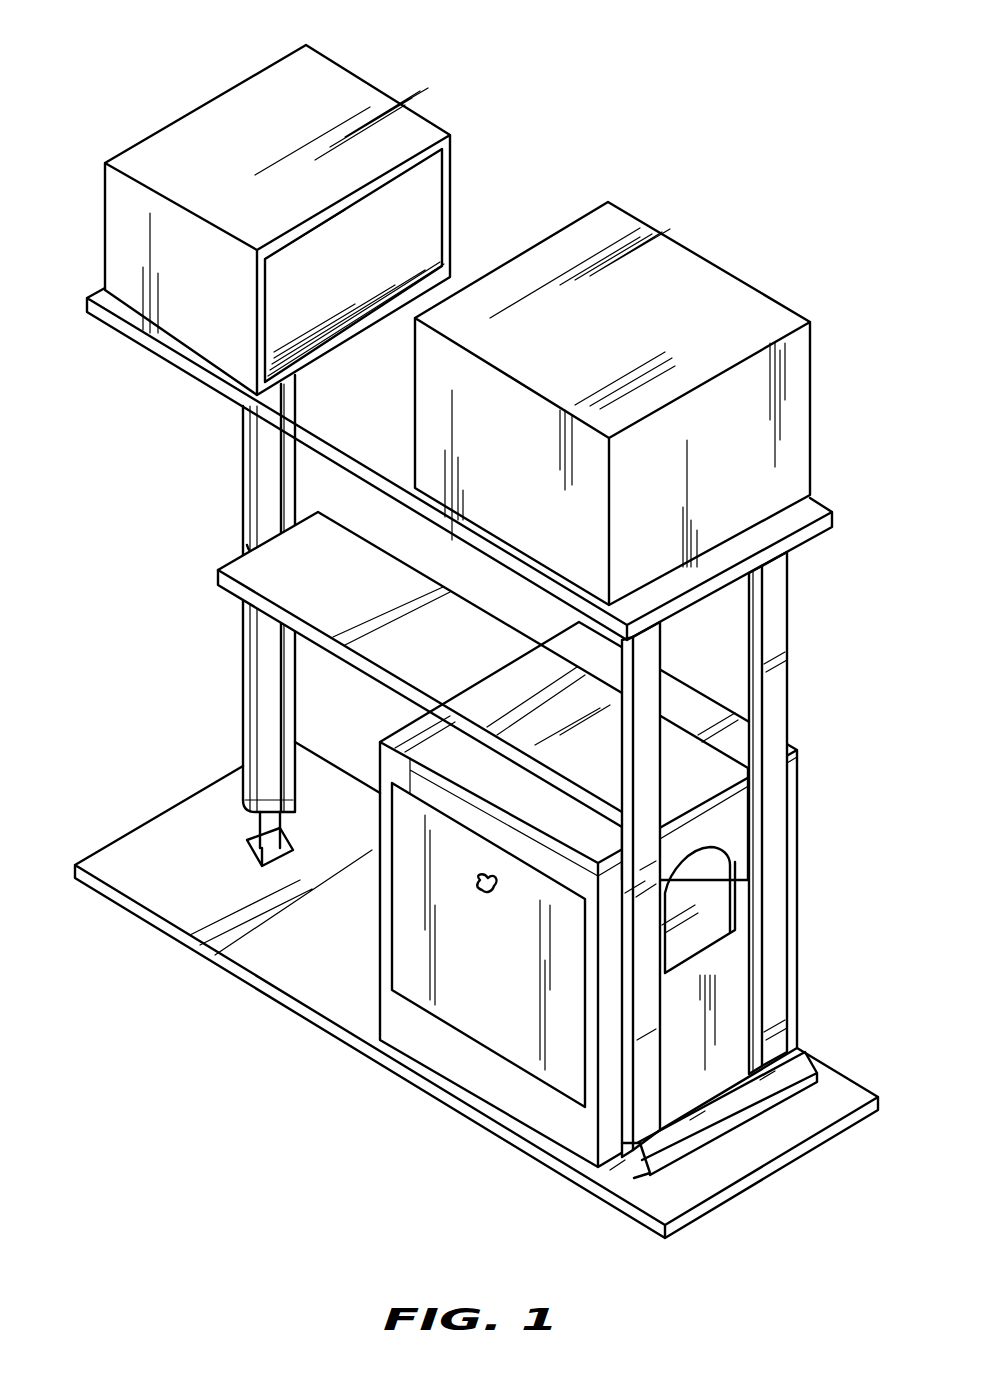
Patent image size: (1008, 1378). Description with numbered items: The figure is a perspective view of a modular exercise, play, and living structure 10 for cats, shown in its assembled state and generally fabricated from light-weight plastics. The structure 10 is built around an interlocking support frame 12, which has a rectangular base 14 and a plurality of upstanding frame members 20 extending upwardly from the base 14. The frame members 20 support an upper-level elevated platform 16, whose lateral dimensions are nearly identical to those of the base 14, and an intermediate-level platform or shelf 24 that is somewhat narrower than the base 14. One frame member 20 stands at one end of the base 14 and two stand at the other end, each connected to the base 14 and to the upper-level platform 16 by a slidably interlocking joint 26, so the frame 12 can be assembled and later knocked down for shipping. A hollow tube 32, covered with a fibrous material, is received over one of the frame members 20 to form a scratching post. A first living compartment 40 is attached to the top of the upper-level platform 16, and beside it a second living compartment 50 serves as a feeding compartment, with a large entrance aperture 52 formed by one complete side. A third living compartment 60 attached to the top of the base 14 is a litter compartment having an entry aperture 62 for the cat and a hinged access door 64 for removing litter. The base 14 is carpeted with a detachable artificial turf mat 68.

The modular exercise, play, and living structure 10 is at (469, 633).
The support frame 12 is at (208, 593).
The base 14 is at (462, 990).
The upper-level elevated platform 16 is at (245, 411).
The upstanding frame members 20 is at (257, 833).
The intermediate-level platform or shelf 24 is at (245, 573).
The slidably interlocking joints 26 is at (259, 861).
The hollow tube 32 is at (258, 788).
The first living compartment 40 is at (700, 290).
The second living compartment 50 is at (277, 208).
The entrance aperture 52 is at (332, 244).
The third living compartment 60 is at (593, 904).
The entry aperture 62 is at (708, 894).
The hinged access door 64 is at (407, 978).
The artificial turf mat 68 is at (140, 878).